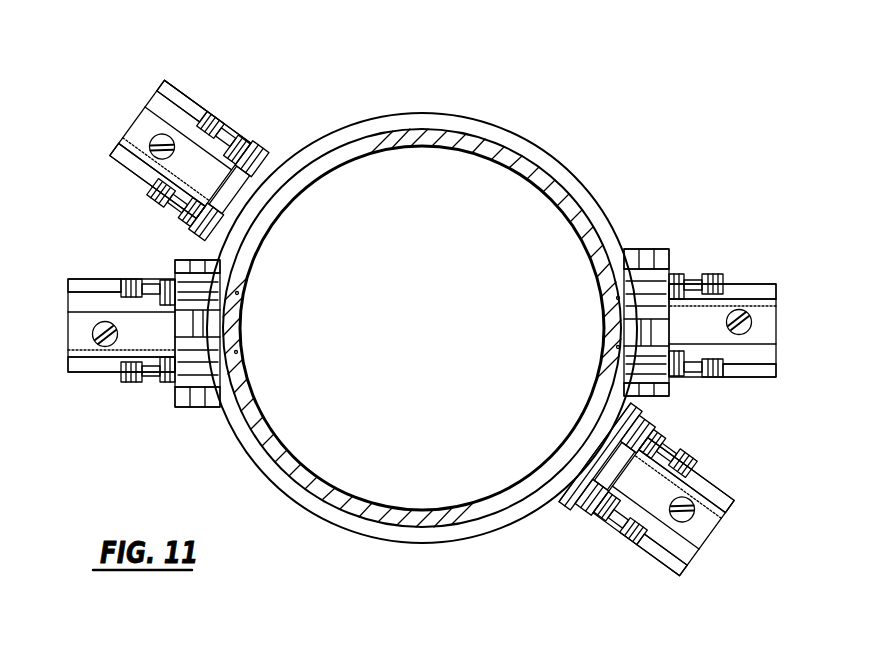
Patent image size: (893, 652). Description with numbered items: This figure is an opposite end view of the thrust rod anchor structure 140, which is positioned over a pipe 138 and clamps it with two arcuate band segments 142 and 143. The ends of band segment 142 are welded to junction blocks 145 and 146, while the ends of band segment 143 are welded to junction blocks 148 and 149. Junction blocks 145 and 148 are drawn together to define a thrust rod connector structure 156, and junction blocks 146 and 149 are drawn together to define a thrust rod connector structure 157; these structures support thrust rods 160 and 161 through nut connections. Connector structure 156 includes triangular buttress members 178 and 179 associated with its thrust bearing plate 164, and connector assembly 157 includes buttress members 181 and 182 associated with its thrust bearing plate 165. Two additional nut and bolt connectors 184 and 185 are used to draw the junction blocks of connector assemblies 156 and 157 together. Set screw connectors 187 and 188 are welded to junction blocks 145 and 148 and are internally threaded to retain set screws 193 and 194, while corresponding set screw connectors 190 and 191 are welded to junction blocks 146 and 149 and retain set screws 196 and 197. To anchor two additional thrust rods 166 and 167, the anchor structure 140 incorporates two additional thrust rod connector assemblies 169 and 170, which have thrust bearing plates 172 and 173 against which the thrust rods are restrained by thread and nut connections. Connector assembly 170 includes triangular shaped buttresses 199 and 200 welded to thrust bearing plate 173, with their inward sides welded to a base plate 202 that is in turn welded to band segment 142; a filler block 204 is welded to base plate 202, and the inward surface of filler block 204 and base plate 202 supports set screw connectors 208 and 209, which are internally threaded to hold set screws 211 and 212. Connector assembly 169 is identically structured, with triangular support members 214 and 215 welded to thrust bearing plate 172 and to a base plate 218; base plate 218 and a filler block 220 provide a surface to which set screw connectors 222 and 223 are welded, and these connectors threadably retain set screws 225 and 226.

The pipe 138 is at (468, 150).
The thrust rod anchor structure 140 is at (436, 325).
The arcuate band segment 142 is at (367, 532).
The arcuate band segment 143 is at (472, 120).
The junction block 145 is at (650, 268).
The junction block 146 is at (185, 258).
The junction block 148 is at (673, 390).
The junction block 149 is at (177, 389).
The thrust rod connector structure 156 is at (685, 303).
The thrust rod connector structure 157 is at (150, 339).
The thrust rod 160 is at (765, 318).
The thrust rod 161 is at (95, 338).
The thrust bearing plate 164 is at (760, 335).
The thrust bearing plate 165 is at (90, 322).
The thrust rod 166 is at (708, 527).
The thrust rod 167 is at (153, 138).
The thrust rod connector assembly 169 is at (635, 509).
The thrust rod connector assembly 170 is at (206, 149).
The thrust bearing plate 172 is at (712, 548).
The thrust bearing plate 173 is at (153, 118).
The triangular buttress member 178 is at (760, 356).
The triangular buttress member 179 is at (743, 293).
The buttress member 181 is at (80, 370).
The buttress member 182 is at (70, 293).
The nut and bolt connector 184 is at (648, 258).
The nut and bolt connector 185 is at (200, 405).
The set screw connector 187 is at (618, 298).
The set screw connector 188 is at (618, 347).
The set screw connector 190 is at (237, 293).
The set screw connector 191 is at (236, 352).
The set screw 193 is at (700, 276).
The set screw 194 is at (697, 378).
The set screw 196 is at (142, 283).
The set screw 197 is at (155, 388).
The triangular shaped buttress 199 is at (182, 107).
The triangular shaped buttress 200 is at (140, 182).
The base plate 202 is at (240, 197).
The filler block 204 is at (282, 228).
The set screw connector 208 is at (292, 208).
The set screw connector 209 is at (267, 250).
The set screw 211 is at (240, 134).
The set screw 212 is at (175, 218).
The triangular support member 214 is at (707, 483).
The triangular support member 215 is at (675, 557).
The base plate 218 is at (612, 470).
The filler block 220 is at (580, 435).
The set screw connector 222 is at (592, 412).
The set screw connector 223 is at (578, 458).
The set screw 225 is at (667, 440).
The set screw 226 is at (612, 528).